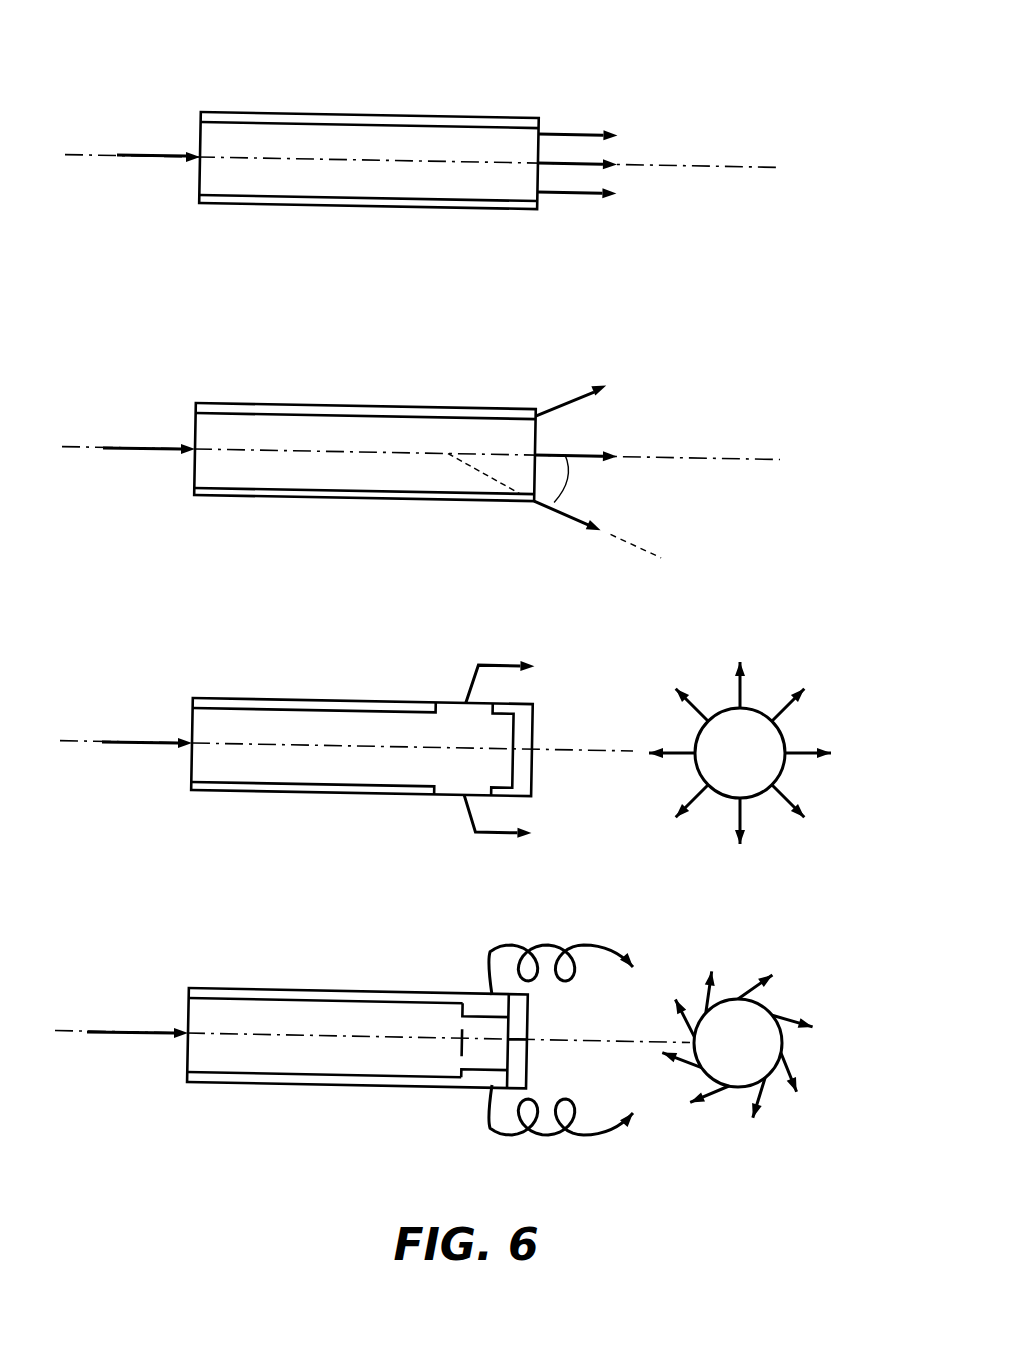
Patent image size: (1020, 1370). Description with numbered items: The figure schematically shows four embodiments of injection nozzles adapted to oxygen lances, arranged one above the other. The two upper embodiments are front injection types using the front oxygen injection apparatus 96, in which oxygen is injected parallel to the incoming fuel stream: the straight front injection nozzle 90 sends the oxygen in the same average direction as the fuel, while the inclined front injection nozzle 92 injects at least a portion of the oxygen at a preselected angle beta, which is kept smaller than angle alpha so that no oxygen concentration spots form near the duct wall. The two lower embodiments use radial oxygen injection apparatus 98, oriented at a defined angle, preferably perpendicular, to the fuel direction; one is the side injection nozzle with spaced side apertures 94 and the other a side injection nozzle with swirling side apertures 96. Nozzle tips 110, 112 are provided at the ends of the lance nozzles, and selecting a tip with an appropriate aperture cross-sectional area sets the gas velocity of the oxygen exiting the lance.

The straight front injection nozzle 90 is at (558, 67).
The inclined front injection nozzle 92 is at (555, 362).
The side injection nozzle with spaced side apertures 94 is at (783, 663).
The front oxygen injection apparatus / side injection nozzle with swirling side aper 96 is at (152, 153).
The radial oxygen injection apparatus 98 is at (138, 741).
The nozzle tip 110 is at (552, 655).
The nozzle tip 112 is at (537, 933).